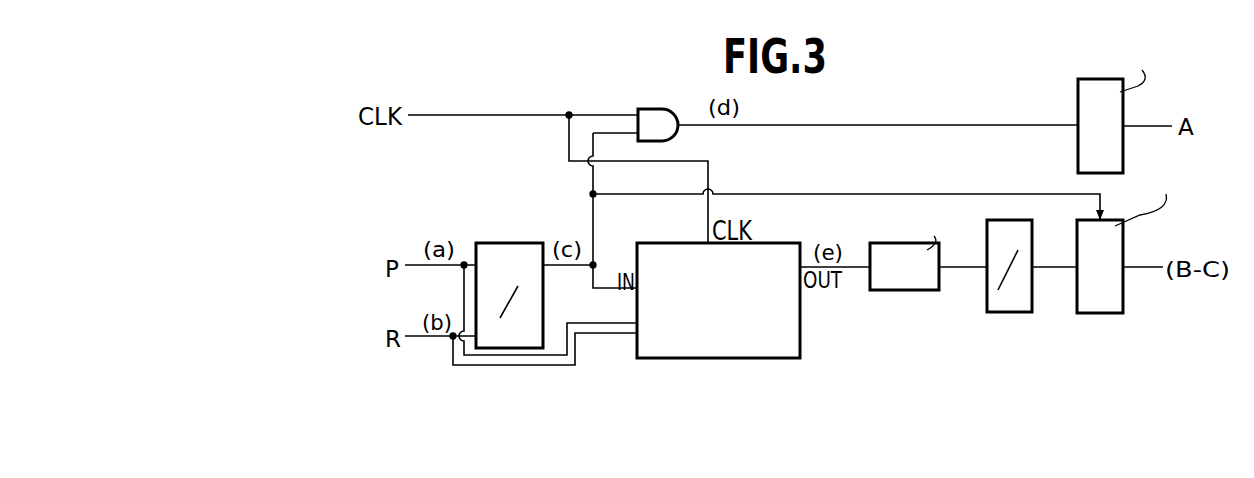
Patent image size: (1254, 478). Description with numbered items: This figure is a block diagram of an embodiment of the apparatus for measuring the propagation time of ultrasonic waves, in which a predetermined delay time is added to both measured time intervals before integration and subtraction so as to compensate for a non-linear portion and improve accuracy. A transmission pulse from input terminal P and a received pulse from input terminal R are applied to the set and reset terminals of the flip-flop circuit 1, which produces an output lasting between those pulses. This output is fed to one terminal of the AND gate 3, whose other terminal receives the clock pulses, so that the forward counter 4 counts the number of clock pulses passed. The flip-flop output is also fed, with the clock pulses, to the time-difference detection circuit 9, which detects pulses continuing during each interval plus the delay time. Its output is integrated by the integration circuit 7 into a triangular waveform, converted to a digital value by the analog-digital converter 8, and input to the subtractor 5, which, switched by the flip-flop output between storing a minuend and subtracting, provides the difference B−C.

The flip-flop circuit 1 is at (510, 243).
The AND gate 3 is at (664, 98).
The forward counter 4 is at (1078, 105).
The subtractor 5 is at (1082, 313).
The integration circuit 7 is at (901, 290).
The analog-digital converter 8 is at (985, 299).
The time-difference detection circuit 9 is at (800, 342).